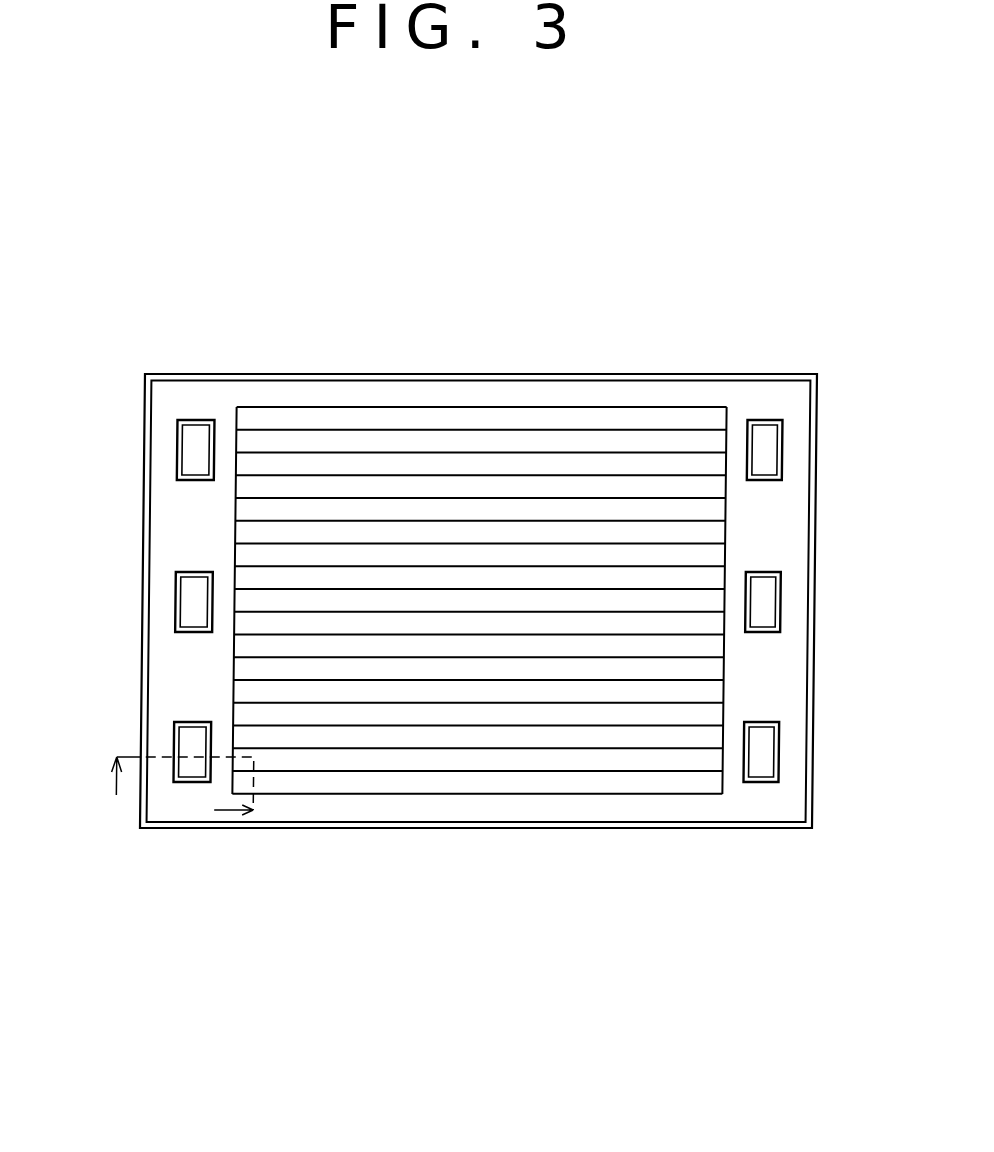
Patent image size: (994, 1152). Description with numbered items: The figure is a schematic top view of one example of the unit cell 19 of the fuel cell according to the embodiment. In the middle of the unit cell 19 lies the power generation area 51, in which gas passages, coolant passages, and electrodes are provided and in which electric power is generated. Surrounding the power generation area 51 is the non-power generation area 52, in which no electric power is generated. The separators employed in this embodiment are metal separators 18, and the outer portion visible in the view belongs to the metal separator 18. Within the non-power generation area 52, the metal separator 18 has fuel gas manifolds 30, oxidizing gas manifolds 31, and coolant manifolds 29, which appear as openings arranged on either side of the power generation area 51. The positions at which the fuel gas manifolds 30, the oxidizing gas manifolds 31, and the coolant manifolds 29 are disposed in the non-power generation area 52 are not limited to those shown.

The metal separator 18 is at (648, 373).
The unit cell 19 is at (472, 576).
The coolant manifold 29 is at (187, 593).
The fuel gas manifold 30 is at (188, 455).
The oxidizing gas manifold 31 is at (185, 743).
The power generation area 51 is at (530, 782).
The non-power generation area 52 is at (373, 810).